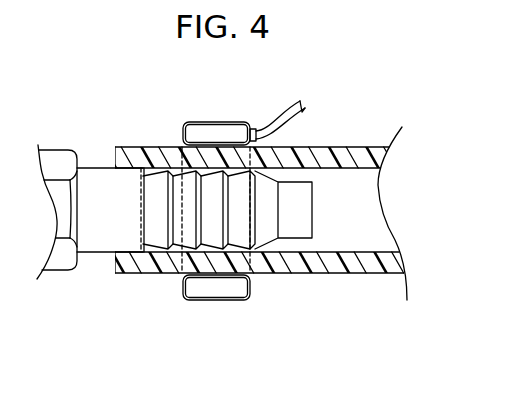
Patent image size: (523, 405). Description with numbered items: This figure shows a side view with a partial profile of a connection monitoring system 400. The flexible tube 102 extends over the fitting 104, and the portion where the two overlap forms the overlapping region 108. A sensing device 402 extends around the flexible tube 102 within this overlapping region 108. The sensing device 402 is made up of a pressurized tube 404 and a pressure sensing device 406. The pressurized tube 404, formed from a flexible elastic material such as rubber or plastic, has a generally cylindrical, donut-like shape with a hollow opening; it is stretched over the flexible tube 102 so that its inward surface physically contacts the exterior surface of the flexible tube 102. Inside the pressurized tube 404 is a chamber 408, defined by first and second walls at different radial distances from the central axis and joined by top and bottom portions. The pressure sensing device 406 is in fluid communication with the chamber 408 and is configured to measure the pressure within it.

The connection monitoring system 400 is at (372, 98).
The sensing device 402 is at (190, 122).
The pressurized tube 404 is at (217, 120).
The pressure sensing device 406 is at (289, 124).
The chamber 408 is at (237, 290).
The flexible tube 102 is at (373, 265).
The fitting 104 is at (110, 188).
The overlapping region 108 is at (313, 337).